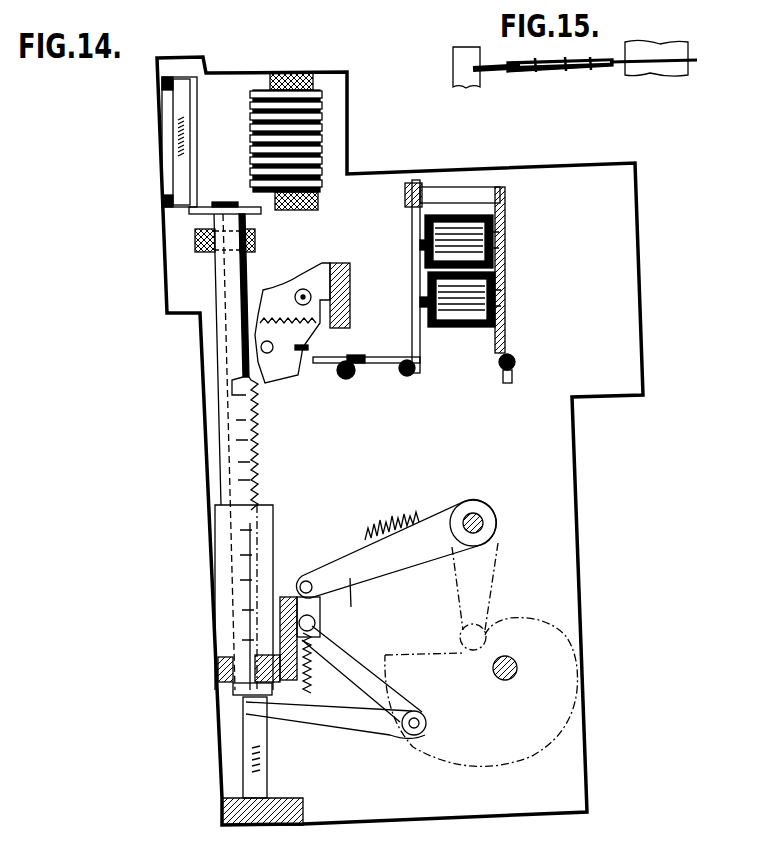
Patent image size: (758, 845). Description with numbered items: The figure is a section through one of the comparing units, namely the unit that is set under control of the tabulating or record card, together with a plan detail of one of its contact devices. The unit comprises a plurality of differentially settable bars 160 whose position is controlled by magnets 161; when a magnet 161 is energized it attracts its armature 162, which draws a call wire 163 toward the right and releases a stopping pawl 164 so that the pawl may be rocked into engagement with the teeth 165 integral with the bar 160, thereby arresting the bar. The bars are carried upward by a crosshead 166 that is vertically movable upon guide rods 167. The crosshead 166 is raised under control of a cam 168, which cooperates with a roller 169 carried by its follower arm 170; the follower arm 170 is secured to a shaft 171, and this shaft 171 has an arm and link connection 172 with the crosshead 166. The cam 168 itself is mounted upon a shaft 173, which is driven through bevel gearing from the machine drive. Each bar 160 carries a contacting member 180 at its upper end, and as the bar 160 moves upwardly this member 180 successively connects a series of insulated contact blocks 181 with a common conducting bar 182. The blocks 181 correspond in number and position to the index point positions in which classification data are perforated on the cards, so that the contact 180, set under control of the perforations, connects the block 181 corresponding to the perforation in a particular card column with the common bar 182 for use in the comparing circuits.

In FIG. 14, the differentially settable bar 160 is at (236, 330).
In FIG. 15, the differentially settable bar 160 is at (548, 72).
In FIG. 14, the magnet 161 is at (455, 226).
In FIG. 14, the armature 162 is at (413, 265).
In FIG. 14, the call wire 163 is at (380, 363).
In FIG. 14, the stopping pawl 164 is at (272, 370).
In FIG. 14, the teeth 165 is at (257, 458).
In FIG. 14, the crosshead 166 is at (218, 667).
In FIG. 14, the guide rod 167 is at (250, 750).
In FIG. 14, the cam 168 is at (558, 725).
In FIG. 14, the roller 169 is at (483, 630).
In FIG. 14, the follower arm 170 is at (490, 577).
In FIG. 14, the shaft 171 is at (484, 515).
In FIG. 14, the arm and link connection 172 is at (320, 605).
In FIG. 14, the shaft 173 is at (517, 665).
In FIG. 14, the contacting member 180 is at (190, 212).
In FIG. 15, the contacting member 180 is at (580, 70).
In FIG. 14, the insulated contact block 181 is at (250, 124).
In FIG. 15, the insulated contact block 181 is at (620, 72).
In FIG. 14, the common conducting bar 182 is at (190, 93).
In FIG. 15, the common conducting bar 182 is at (483, 75).